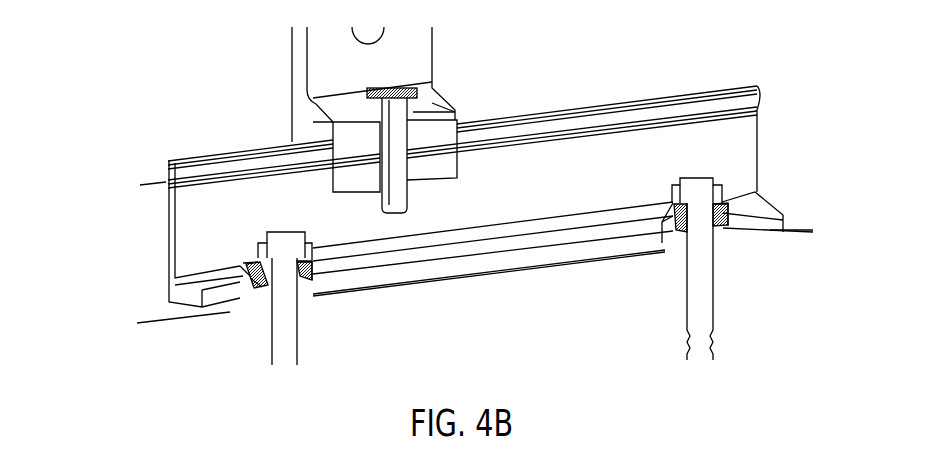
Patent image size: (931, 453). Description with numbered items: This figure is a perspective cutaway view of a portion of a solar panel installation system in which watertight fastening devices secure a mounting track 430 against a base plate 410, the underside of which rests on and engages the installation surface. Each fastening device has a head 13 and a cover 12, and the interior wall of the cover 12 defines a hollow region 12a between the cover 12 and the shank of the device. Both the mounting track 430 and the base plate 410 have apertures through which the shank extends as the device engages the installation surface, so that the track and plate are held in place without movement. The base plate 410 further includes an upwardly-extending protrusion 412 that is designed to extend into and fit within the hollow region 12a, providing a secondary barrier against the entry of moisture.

The cover 12 is at (240, 262).
The hollow region 12a is at (308, 274).
The head 13 is at (278, 228).
The base plate 410 is at (485, 284).
The upwardly-extending protrusion 412 is at (270, 288).
The mounting track 430 is at (165, 239).